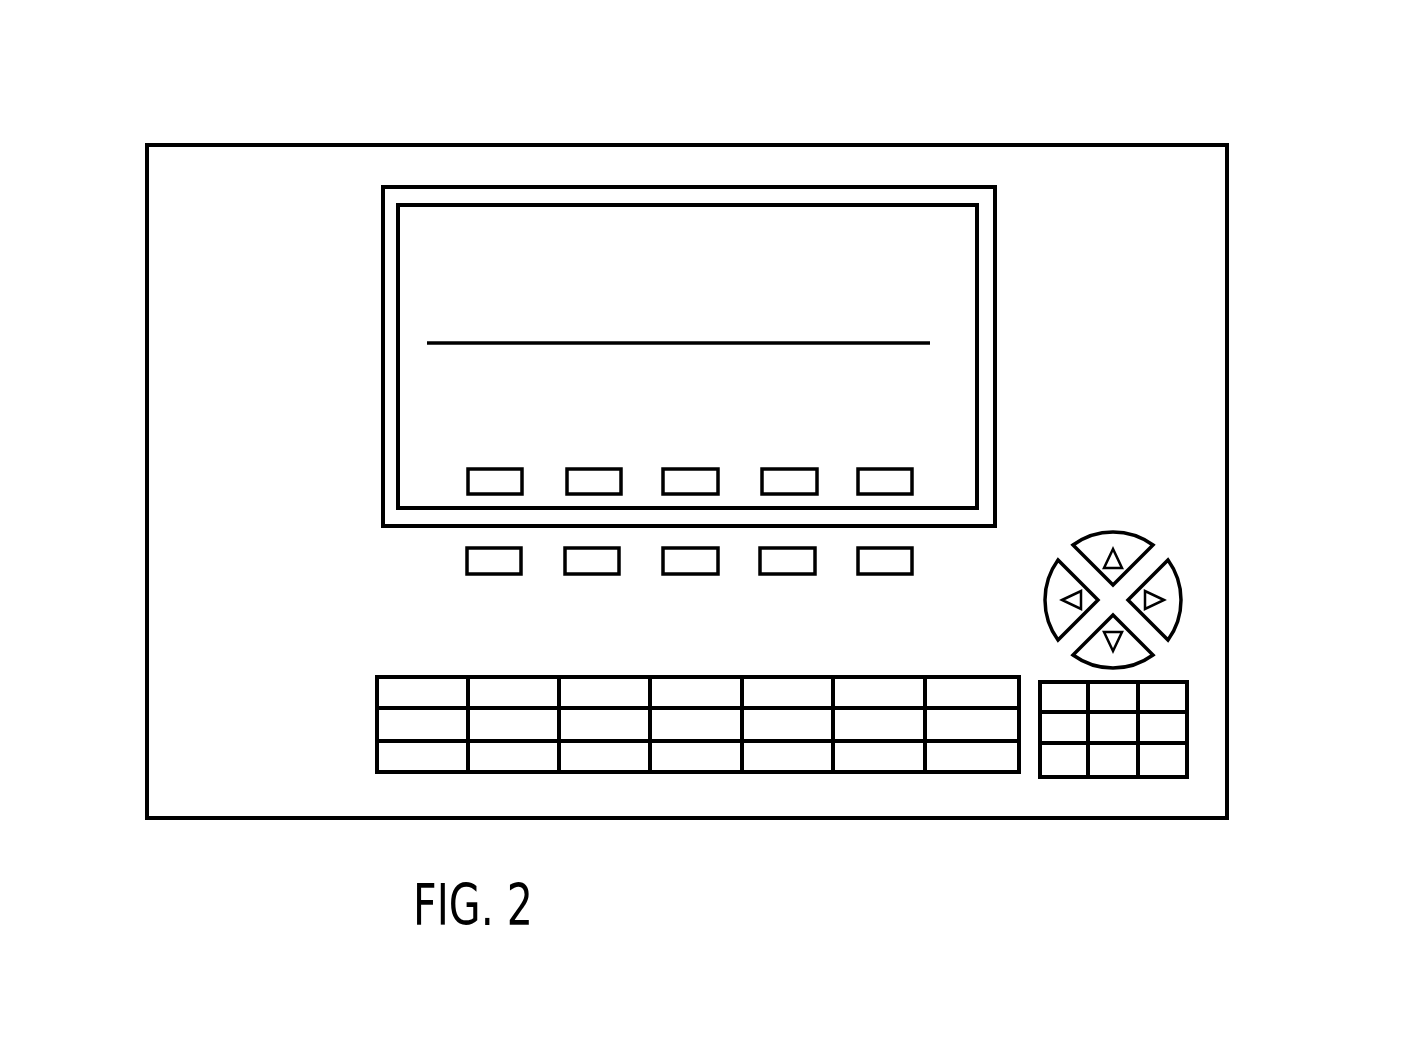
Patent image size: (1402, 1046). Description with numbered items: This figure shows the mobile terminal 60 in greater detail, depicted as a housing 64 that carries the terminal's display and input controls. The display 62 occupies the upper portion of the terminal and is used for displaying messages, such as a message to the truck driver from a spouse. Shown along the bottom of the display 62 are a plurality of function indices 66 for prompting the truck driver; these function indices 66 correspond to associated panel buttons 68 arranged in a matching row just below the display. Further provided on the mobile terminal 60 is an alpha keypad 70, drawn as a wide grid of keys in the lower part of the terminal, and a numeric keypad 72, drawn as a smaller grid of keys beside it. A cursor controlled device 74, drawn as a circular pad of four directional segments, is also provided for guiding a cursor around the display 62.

The mobile terminal 60 is at (204, 80).
The display 62 is at (895, 230).
The terminal housing 64 is at (1200, 256).
The function indices 66 is at (522, 468).
The panel buttons 68 is at (521, 572).
The alpha keypad 70 is at (685, 772).
The numeric keypad 72 is at (1112, 777).
The cursor controlled device 74 is at (1177, 585).